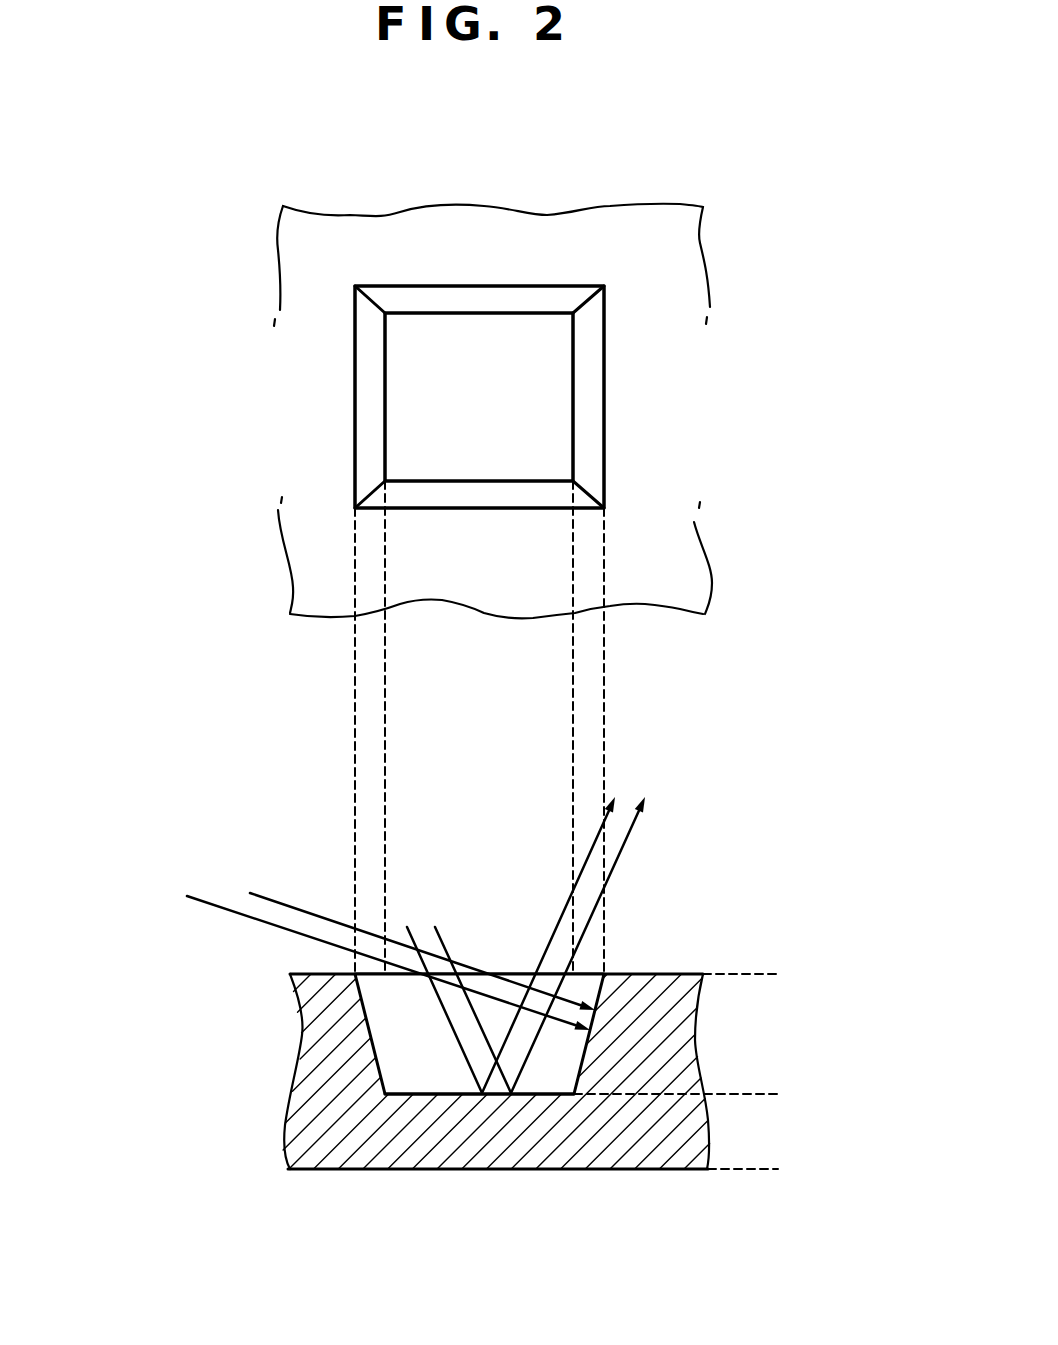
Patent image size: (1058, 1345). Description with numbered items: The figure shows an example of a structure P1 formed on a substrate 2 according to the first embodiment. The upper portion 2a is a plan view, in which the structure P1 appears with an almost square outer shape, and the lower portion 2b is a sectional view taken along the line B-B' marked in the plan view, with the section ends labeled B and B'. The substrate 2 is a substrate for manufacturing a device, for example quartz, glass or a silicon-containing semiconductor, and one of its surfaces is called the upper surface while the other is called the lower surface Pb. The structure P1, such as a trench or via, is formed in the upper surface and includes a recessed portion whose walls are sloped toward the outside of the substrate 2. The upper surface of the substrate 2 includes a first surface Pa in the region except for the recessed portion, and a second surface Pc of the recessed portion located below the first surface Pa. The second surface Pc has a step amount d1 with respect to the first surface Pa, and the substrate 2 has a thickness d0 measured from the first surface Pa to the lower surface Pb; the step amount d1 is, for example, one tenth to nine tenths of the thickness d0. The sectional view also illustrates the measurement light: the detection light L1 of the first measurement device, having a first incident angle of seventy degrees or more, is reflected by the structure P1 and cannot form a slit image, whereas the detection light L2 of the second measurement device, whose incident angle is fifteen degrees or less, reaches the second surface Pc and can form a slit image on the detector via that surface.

The substrate 2 is at (704, 886).
The upper portion (plan view) 2a is at (206, 237).
The lower portion (sectional view) 2b is at (206, 817).
The structure P1 is at (551, 290).
The first surface Pa is at (670, 350).
The lower surface Pb is at (320, 1169).
The second surface Pc is at (451, 420).
The detection light of the first measurement device L1 is at (391, 951).
The detection light of the second measurement device L2 is at (525, 945).
The section line B is at (318, 681).
The section line B' is at (662, 680).
The thickness d0 is at (770, 989).
The step amount d1 is at (720, 989).